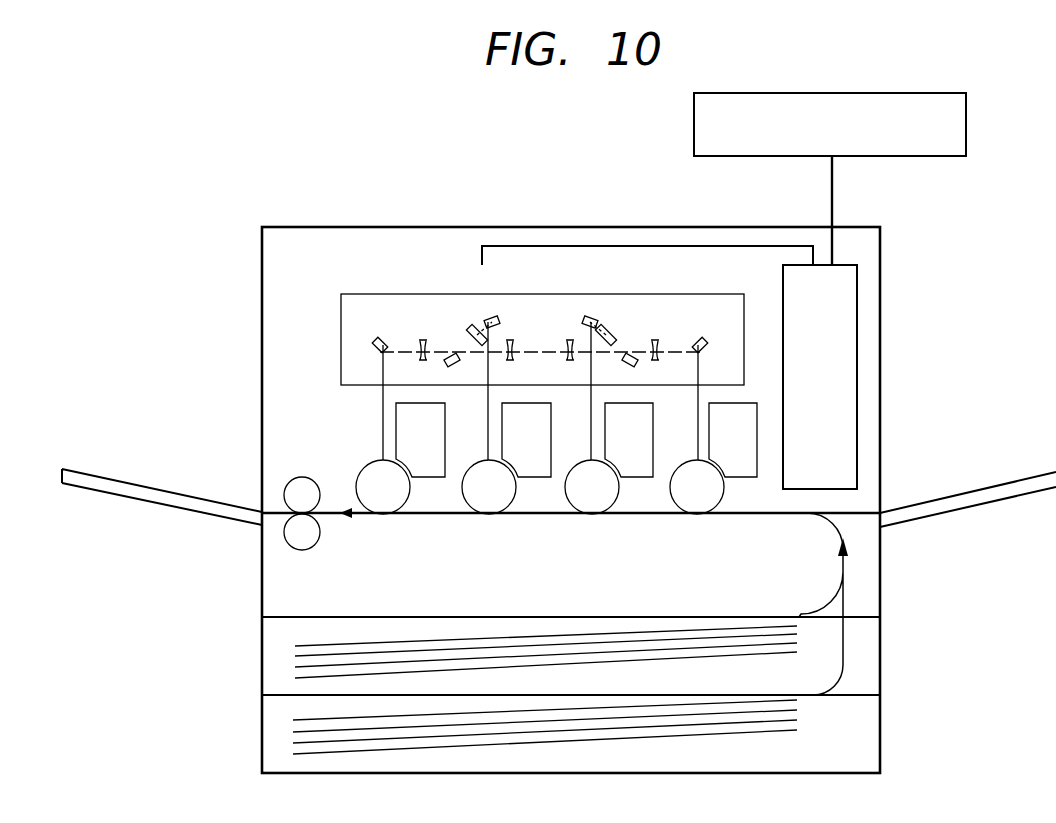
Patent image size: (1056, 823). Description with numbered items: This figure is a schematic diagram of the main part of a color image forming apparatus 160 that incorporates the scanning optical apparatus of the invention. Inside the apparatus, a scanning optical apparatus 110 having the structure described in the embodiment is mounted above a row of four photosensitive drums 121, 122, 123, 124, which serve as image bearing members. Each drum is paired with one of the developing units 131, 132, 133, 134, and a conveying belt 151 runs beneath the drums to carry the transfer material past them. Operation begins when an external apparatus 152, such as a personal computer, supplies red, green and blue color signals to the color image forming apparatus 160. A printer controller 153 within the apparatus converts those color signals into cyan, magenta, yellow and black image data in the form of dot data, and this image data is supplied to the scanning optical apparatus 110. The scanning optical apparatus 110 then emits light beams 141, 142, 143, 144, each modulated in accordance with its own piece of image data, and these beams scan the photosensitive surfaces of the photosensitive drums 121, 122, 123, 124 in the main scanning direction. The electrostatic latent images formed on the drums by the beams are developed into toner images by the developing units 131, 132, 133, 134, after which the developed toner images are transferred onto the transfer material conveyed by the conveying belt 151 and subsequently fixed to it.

The scanning optical apparatus 110 is at (341, 320).
The photosensitive drum 121 is at (382, 503).
The photosensitive drum 122 is at (488, 503).
The photosensitive drum 123 is at (591, 503).
The photosensitive drum 124 is at (696, 503).
The developing unit 131 is at (420, 440).
The developing unit 132 is at (526, 440).
The developing unit 133 is at (629, 440).
The developing unit 134 is at (733, 440).
The light beam 141 is at (383, 432).
The light beam 142 is at (485, 413).
The light beam 143 is at (588, 413).
The light beam 144 is at (693, 413).
The conveying belt 151 is at (843, 566).
The external apparatus 152 is at (966, 120).
The printer controller 153 is at (858, 349).
The color image forming apparatus 160 is at (366, 227).